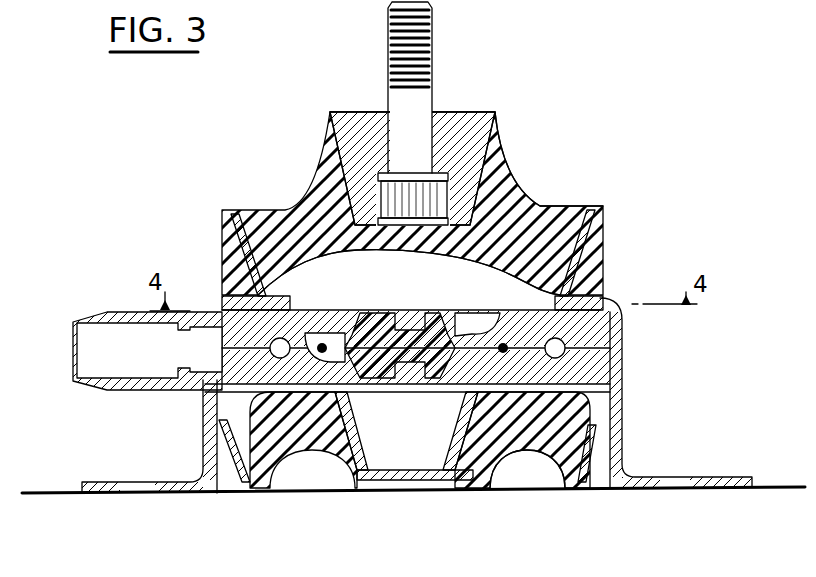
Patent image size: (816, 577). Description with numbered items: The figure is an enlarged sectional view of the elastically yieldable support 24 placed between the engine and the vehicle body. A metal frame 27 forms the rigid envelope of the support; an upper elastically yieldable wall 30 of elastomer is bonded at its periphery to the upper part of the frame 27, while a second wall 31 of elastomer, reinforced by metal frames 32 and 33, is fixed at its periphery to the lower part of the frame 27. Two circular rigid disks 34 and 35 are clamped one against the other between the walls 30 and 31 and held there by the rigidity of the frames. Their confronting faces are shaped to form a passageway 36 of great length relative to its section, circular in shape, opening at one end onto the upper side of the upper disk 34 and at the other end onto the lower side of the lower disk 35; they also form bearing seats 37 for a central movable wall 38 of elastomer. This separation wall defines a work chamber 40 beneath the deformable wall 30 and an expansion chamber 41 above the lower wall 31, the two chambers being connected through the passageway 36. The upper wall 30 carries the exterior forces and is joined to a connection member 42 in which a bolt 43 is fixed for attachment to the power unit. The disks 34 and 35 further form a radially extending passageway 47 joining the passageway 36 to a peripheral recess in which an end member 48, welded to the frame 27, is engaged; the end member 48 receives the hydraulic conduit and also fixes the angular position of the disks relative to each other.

The elastically yieldable support 24 is at (518, 176).
The metal frame 27 is at (620, 302).
The elastically yieldable wall 30 is at (282, 230).
The second wall 31 is at (300, 445).
The metal frame 32 is at (226, 488).
The metal frame 33 is at (391, 494).
The upper rigid disk 34 is at (612, 324).
The lower rigid disk 35 is at (608, 362).
The passageway 36 is at (612, 347).
The bearing seats 37 is at (466, 326).
The movable wall 38 is at (447, 377).
The chamber 40 is at (409, 272).
The second chamber 41 is at (406, 436).
The connection member 42 is at (476, 114).
The bolt 43 is at (419, 114).
The radially extending passageway 47 is at (248, 362).
The end member 48 is at (119, 388).